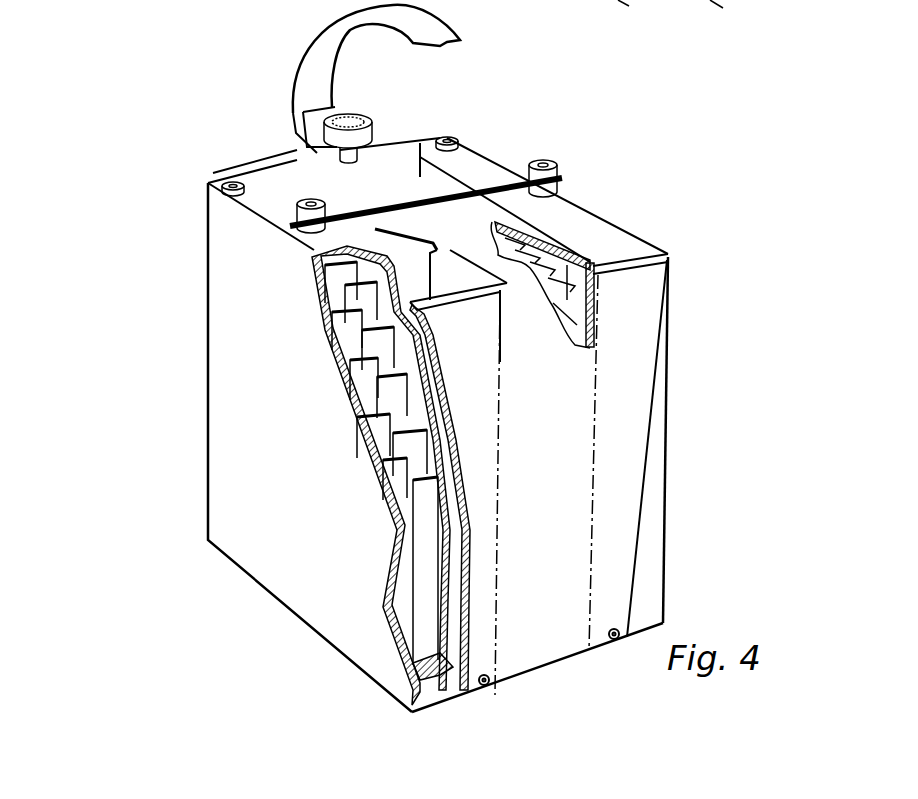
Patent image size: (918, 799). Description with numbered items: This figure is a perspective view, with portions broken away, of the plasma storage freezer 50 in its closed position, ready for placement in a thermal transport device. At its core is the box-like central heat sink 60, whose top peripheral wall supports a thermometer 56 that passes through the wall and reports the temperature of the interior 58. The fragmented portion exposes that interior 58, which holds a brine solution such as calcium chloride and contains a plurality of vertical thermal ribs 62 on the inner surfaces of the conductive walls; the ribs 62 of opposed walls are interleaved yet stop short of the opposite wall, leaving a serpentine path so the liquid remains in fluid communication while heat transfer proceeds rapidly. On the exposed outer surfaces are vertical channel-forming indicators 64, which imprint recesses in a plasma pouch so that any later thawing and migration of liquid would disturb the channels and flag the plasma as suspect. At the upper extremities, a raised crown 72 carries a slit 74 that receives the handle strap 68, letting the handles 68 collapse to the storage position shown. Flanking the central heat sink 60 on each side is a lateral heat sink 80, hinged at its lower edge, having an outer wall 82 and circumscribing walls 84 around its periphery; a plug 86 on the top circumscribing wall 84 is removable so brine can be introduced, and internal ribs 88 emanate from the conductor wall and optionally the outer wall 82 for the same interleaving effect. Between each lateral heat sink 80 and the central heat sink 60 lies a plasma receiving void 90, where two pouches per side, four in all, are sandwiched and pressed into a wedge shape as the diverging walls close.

The freezer 50 is at (557, 216).
The thermometer 56 is at (353, 137).
The interior 58 is at (563, 268).
The central heat sink 60 is at (597, 484).
The thermal ribs 62 is at (592, 342).
The channel-forming indicators 64 is at (437, 273).
The handle strap 68 is at (310, 80).
The raised crown 72 is at (732, 17).
The slit 74 is at (634, 18).
The lateral heat sink 80 is at (449, 475).
The outer wall 82 is at (252, 313).
The circumscribing walls 84 is at (263, 203).
The plug 86 is at (233, 186).
The internal ribs 88 is at (387, 392).
The plasma receiving void 90 is at (387, 233).